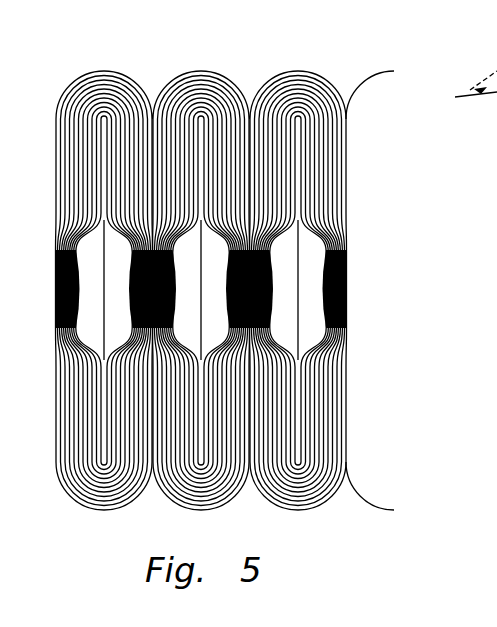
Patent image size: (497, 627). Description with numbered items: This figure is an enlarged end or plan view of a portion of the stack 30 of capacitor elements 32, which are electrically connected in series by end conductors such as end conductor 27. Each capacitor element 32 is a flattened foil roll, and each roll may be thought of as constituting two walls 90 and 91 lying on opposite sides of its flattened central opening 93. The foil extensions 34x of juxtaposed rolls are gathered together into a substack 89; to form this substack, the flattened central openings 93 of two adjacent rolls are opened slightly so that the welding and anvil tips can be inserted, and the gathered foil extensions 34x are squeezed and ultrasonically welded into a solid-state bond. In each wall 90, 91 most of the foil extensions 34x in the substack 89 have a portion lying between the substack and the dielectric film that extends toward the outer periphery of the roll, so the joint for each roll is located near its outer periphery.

The stack 30 is at (218, 58).
The capacitor element 32 is at (168, 86).
The foil extension 34x is at (81, 83).
The wall 91 is at (176, 290).
The wall 90 is at (227, 290).
The flattened central opening 93 is at (103, 250).
The end conductor 27 is at (134, 277).
The substack 89 is at (150, 281).